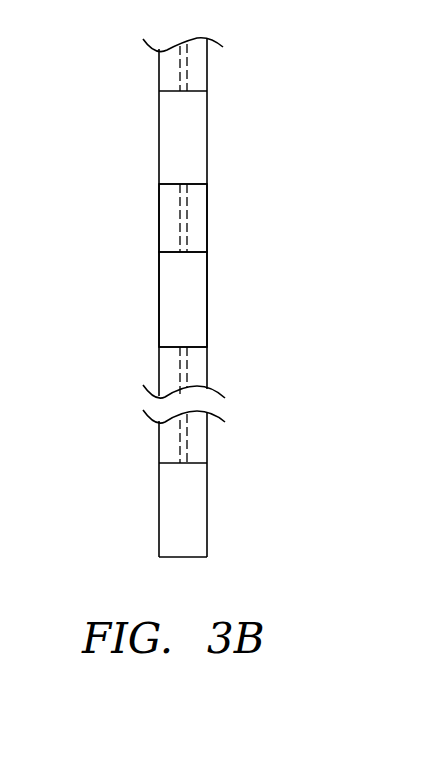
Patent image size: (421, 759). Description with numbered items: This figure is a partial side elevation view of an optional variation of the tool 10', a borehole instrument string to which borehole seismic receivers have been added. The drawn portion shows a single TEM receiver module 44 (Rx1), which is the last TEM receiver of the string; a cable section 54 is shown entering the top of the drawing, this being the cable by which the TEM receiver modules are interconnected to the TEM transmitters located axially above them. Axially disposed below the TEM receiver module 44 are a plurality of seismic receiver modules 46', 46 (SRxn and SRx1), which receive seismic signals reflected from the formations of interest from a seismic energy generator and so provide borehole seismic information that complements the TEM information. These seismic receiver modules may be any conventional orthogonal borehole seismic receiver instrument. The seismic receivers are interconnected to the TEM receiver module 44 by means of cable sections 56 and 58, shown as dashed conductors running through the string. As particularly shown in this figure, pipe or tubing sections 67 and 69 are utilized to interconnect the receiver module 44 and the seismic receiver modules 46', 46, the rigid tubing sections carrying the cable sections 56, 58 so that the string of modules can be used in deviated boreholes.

The tool 10' is at (135, 297).
The cable section 54 is at (189, 72).
The TEM receiver module 44 is at (207, 112).
The pipe or tubing section 67 is at (159, 224).
The cable section 56 is at (188, 218).
The seismic receiver module 46' is at (213, 299).
The pipe or tubing section 69 is at (159, 368).
The cable section 58 is at (188, 385).
The seismic receiver module 46 is at (210, 503).